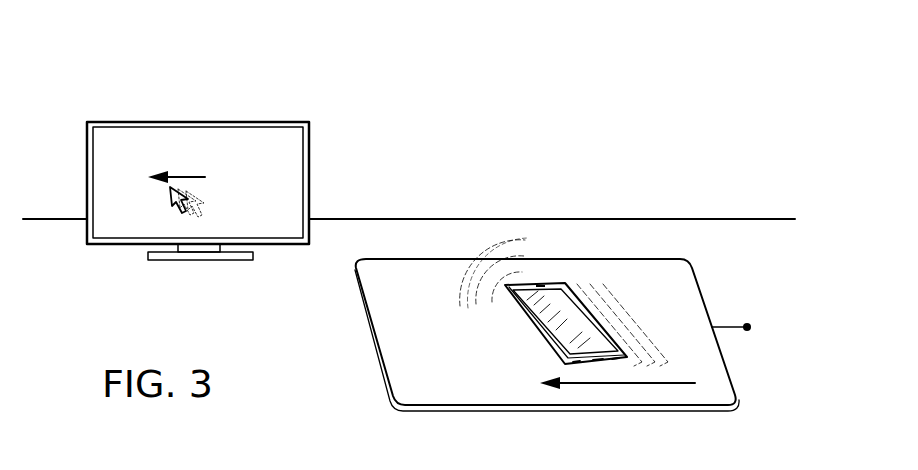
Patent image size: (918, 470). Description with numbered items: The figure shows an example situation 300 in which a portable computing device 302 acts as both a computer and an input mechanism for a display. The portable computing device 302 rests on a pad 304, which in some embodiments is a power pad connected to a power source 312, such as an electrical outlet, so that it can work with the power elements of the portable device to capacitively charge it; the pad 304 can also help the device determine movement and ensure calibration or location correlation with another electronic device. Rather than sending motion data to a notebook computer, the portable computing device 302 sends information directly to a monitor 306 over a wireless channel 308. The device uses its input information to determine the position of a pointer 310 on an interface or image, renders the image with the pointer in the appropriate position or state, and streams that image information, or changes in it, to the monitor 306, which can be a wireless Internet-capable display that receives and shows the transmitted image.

The example situation 300 is at (750, 72).
The portable computing device 302 is at (550, 347).
The pad 304 is at (370, 326).
The monitor 306 is at (87, 153).
The wireless channel 308 is at (547, 226).
The pointer 310 is at (165, 214).
The power source 312 is at (749, 325).